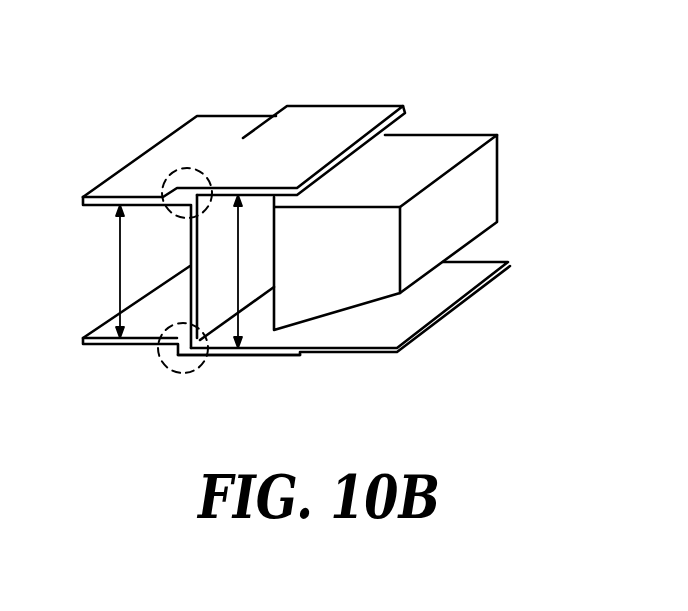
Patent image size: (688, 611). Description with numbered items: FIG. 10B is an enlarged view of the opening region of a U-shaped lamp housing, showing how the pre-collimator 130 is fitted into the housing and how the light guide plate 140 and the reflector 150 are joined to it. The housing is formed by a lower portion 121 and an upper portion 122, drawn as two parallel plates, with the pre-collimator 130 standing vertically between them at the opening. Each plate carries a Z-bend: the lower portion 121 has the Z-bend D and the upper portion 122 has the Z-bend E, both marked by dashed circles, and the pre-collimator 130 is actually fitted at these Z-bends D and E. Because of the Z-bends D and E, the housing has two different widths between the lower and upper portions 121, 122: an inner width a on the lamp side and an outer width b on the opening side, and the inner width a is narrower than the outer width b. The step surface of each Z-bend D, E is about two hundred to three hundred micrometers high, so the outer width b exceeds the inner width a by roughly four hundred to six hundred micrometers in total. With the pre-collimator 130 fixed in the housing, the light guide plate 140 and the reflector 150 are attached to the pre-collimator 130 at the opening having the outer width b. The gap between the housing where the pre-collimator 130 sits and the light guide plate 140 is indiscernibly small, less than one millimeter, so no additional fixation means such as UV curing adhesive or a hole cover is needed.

The lower portion 121 is at (112, 350).
The upper portion 122 is at (216, 128).
The pre-collimator 130 is at (190, 247).
The light guide plate 140 is at (481, 172).
The reflector 150 is at (363, 330).
The Z-bend E is at (172, 170).
The Z-bend D is at (178, 375).
The inner width a is at (113, 271).
The outer width b is at (231, 271).